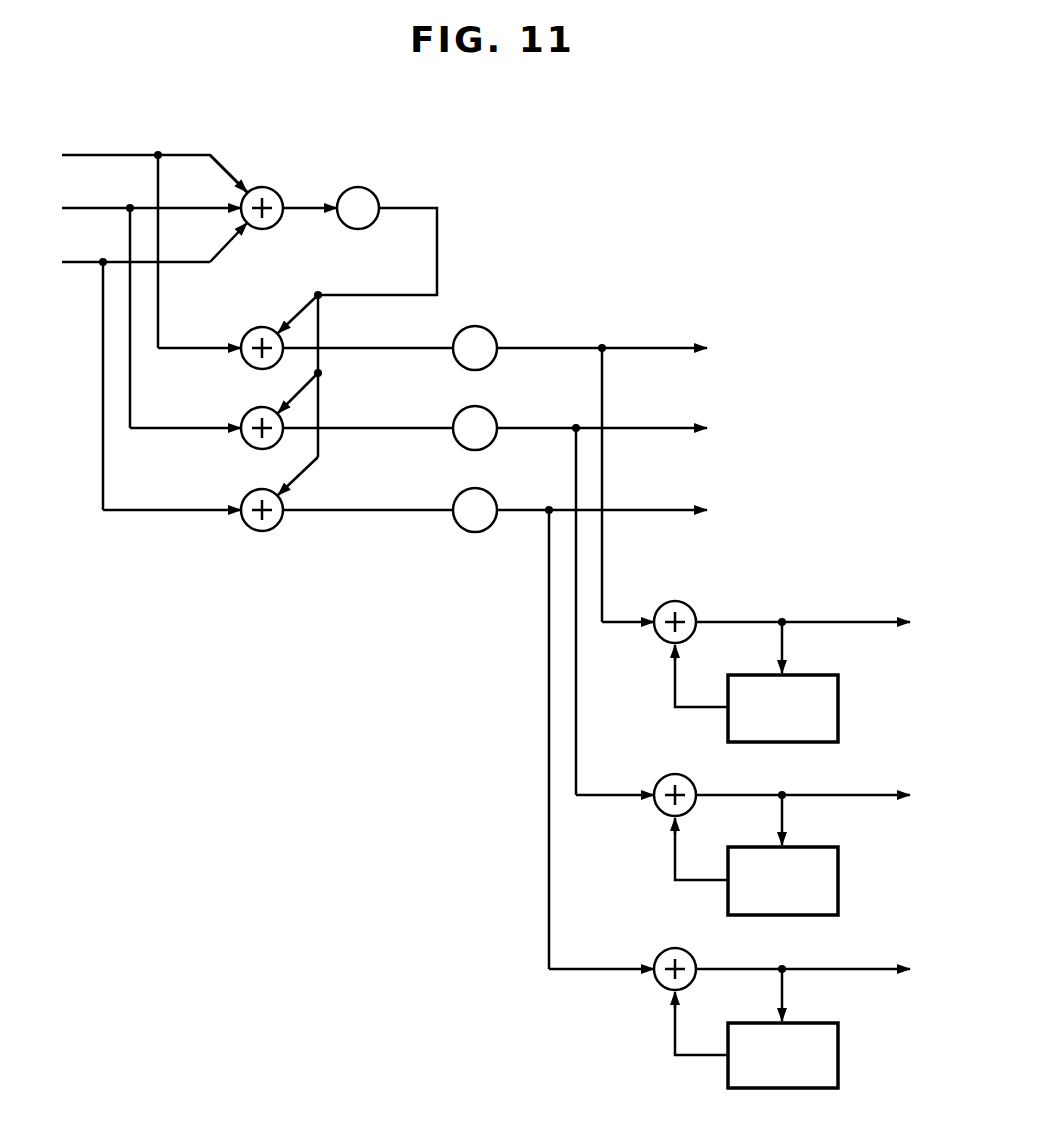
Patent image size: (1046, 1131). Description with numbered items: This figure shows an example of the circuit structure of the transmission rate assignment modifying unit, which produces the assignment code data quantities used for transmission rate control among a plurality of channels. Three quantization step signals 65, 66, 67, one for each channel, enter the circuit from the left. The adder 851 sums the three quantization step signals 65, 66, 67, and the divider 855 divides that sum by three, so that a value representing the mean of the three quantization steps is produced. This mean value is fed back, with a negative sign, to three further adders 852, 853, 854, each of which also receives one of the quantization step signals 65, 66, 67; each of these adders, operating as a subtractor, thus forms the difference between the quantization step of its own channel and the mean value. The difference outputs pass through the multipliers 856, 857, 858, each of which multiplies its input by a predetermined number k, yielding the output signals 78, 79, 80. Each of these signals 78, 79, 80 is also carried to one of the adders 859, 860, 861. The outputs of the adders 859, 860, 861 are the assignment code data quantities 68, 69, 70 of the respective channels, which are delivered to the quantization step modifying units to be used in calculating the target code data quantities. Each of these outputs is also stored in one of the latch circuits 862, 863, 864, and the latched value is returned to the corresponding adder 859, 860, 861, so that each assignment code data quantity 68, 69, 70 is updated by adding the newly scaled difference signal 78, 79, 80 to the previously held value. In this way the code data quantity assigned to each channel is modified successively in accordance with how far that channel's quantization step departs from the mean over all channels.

The quantization step signal 65 is at (86, 155).
The quantization step signal 66 is at (86, 213).
The quantization step signal 67 is at (86, 266).
The adder 851 is at (262, 186).
The divider 855 is at (358, 186).
The adder 852 is at (246, 333).
The adder 853 is at (248, 412).
The adder 854 is at (248, 494).
The multiplier 856 is at (456, 371).
The multiplier 857 is at (454, 455).
The multiplier 858 is at (456, 535).
The output signal 78 is at (656, 347).
The output signal 79 is at (656, 427).
The output signal 80 is at (652, 507).
The adder 859 is at (672, 601).
The adder 860 is at (658, 781).
The adder 861 is at (660, 948).
The assignment code data quantity 68 is at (872, 613).
The assignment code data quantity 69 is at (872, 793).
The assignment code data quantity 70 is at (872, 968).
The latch circuit 862 is at (840, 708).
The latch circuit 863 is at (842, 878).
The latch circuit 864 is at (842, 1053).